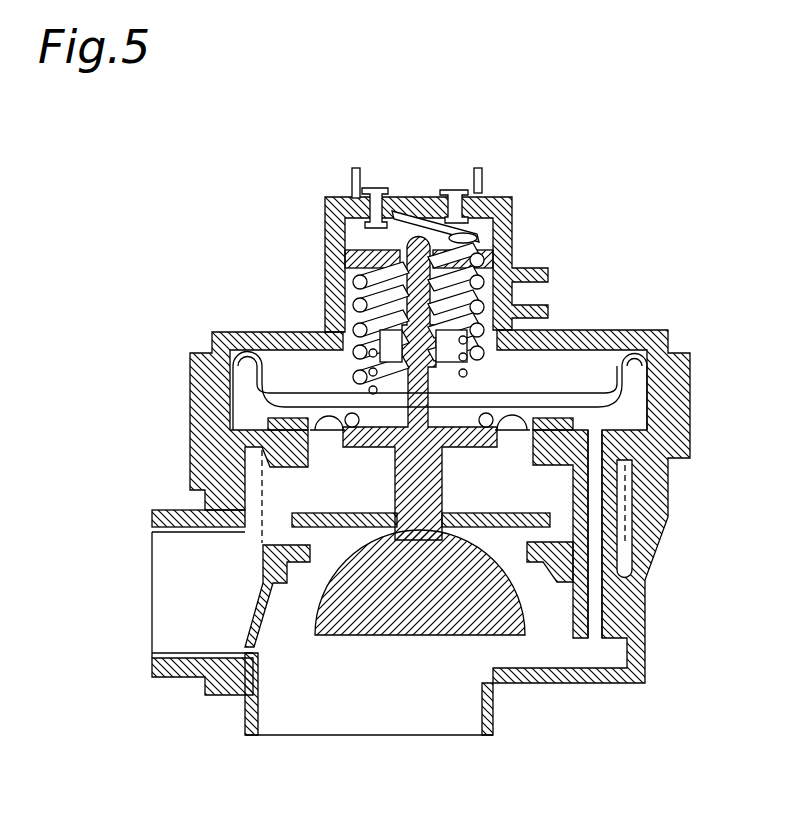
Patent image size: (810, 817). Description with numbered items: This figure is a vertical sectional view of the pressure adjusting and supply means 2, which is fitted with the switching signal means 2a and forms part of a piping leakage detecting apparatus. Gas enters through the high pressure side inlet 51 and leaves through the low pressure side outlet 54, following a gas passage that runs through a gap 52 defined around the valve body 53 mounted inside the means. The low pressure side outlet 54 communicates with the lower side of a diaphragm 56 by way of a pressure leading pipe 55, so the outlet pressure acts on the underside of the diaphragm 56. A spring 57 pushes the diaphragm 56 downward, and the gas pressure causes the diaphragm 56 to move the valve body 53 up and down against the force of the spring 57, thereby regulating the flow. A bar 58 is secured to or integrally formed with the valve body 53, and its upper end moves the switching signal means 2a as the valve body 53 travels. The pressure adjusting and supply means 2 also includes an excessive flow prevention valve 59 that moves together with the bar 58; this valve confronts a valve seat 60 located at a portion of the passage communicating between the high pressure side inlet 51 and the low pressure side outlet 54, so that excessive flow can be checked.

The pressure adjusting and supply means 2 is at (233, 718).
The switching signal means 2a is at (416, 225).
The high pressure side inlet 51 is at (162, 572).
The gap 52 is at (305, 580).
The valve body 53 is at (468, 623).
The low pressure side outlet 54 is at (380, 718).
The pressure leading pipe 55 is at (598, 628).
The diaphragm 56 is at (607, 390).
The spring 57 is at (475, 283).
The bar 58 is at (413, 292).
The excessive flow prevention valve 59 is at (290, 513).
The valve seat 60 is at (300, 530).